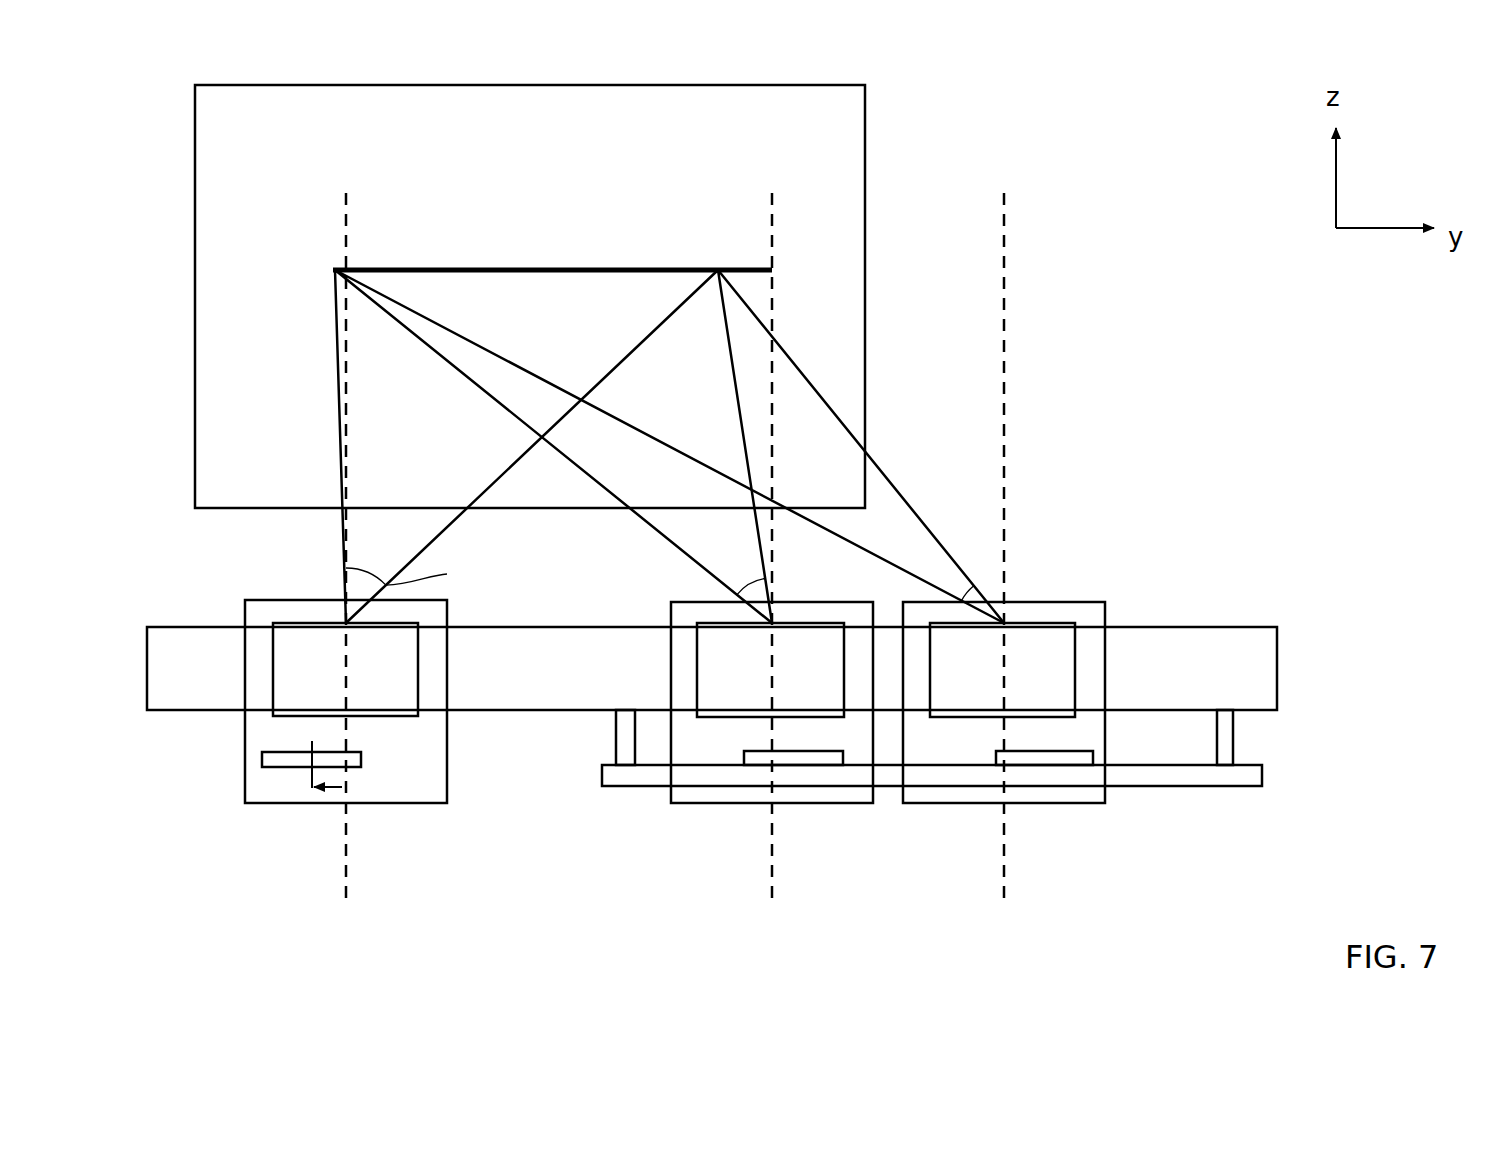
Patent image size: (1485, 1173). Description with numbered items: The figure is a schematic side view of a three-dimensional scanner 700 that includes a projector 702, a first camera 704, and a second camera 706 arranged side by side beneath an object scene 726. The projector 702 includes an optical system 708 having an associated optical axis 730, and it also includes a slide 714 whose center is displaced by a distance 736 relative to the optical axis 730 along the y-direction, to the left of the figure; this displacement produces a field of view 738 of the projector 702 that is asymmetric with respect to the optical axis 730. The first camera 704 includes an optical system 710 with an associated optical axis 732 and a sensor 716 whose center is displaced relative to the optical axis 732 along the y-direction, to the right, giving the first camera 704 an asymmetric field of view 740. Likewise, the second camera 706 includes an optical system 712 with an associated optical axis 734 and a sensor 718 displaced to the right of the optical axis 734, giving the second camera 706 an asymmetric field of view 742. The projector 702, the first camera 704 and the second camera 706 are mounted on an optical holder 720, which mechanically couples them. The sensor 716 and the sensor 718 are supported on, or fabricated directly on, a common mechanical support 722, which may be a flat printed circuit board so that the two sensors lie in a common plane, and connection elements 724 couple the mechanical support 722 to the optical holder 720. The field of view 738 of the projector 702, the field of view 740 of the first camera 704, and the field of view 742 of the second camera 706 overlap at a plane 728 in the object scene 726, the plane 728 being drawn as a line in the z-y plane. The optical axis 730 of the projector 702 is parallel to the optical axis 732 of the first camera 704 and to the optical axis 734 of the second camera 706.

The 3D scanner 700 is at (1150, 153).
The projector 702 is at (427, 805).
The first camera 704 is at (873, 803).
The second camera 706 is at (1105, 803).
The optical system 708 is at (325, 688).
The optical system 710 is at (751, 688).
The optical system 712 is at (983, 688).
The slide 714 is at (262, 753).
The sensor 716 is at (835, 765).
The sensor 718 is at (1060, 765).
The optical holder 720 is at (1277, 628).
The mechanical support 722 is at (1228, 786).
The connection elements 724 is at (1233, 735).
The object scene 726 is at (865, 121).
The plane 728 is at (640, 268).
The optical axis 730 is at (346, 194).
The optical axis 732 is at (772, 318).
The optical axis 734 is at (1004, 293).
The distance 736 is at (339, 793).
The field of view 738 is at (422, 574).
The field of view 740 is at (740, 578).
The field of view 742 is at (940, 572).